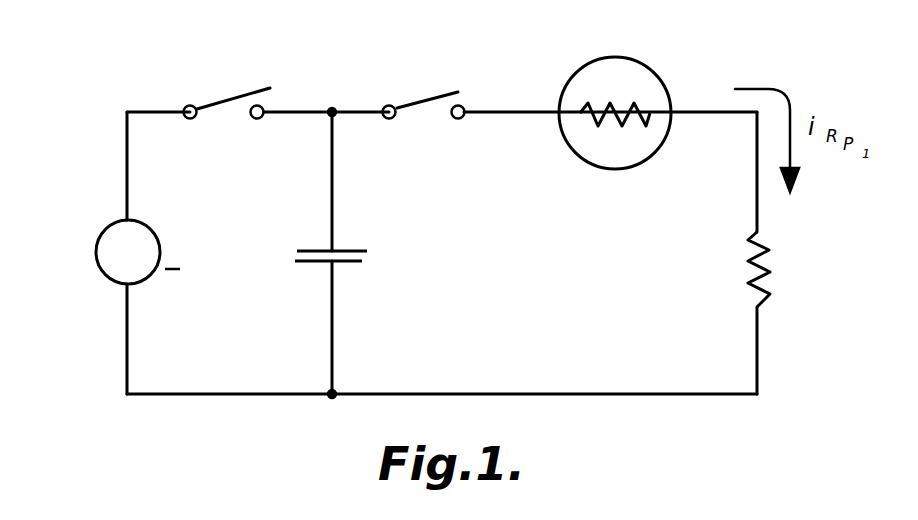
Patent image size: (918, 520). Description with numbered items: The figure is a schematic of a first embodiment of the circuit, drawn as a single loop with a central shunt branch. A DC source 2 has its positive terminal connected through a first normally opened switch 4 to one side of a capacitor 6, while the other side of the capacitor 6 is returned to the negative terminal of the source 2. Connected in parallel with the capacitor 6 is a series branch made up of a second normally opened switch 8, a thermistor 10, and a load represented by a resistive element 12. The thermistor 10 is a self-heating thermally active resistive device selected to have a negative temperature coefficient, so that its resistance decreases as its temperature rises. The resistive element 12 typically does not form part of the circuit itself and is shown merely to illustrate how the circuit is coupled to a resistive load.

The DC source 2 is at (97, 236).
The first normally opened switch 4 is at (232, 95).
The capacitor 6 is at (372, 262).
The second normally opened switch 8 is at (436, 95).
The thermistor 10 is at (668, 96).
The resistive element 12 is at (748, 267).